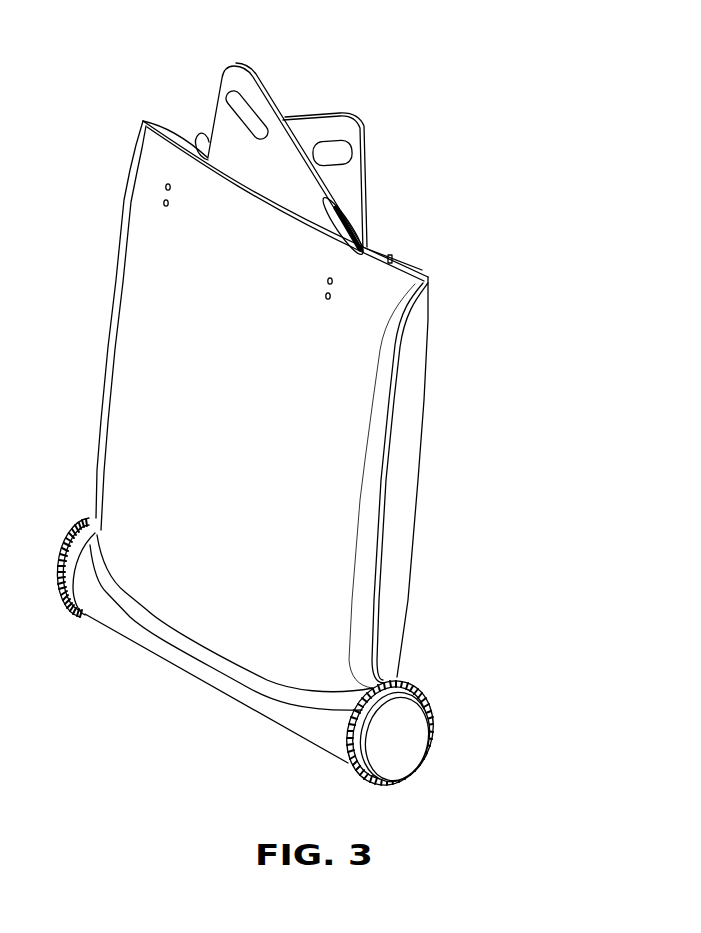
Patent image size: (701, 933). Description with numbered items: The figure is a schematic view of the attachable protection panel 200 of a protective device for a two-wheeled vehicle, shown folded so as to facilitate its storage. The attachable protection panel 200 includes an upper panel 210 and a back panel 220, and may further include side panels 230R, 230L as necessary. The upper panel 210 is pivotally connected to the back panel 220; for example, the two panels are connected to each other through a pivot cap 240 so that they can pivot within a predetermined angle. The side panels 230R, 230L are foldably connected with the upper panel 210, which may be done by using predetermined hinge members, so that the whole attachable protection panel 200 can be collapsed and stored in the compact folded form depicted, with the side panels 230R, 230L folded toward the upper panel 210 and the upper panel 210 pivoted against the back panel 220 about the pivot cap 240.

The attachable protection panel 200 is at (349, 404).
The upper panel 210 is at (347, 368).
The back panel 220 is at (421, 432).
The side panel 230R is at (218, 93).
The side panel 230L is at (360, 155).
The pivot cap 240 is at (421, 720).